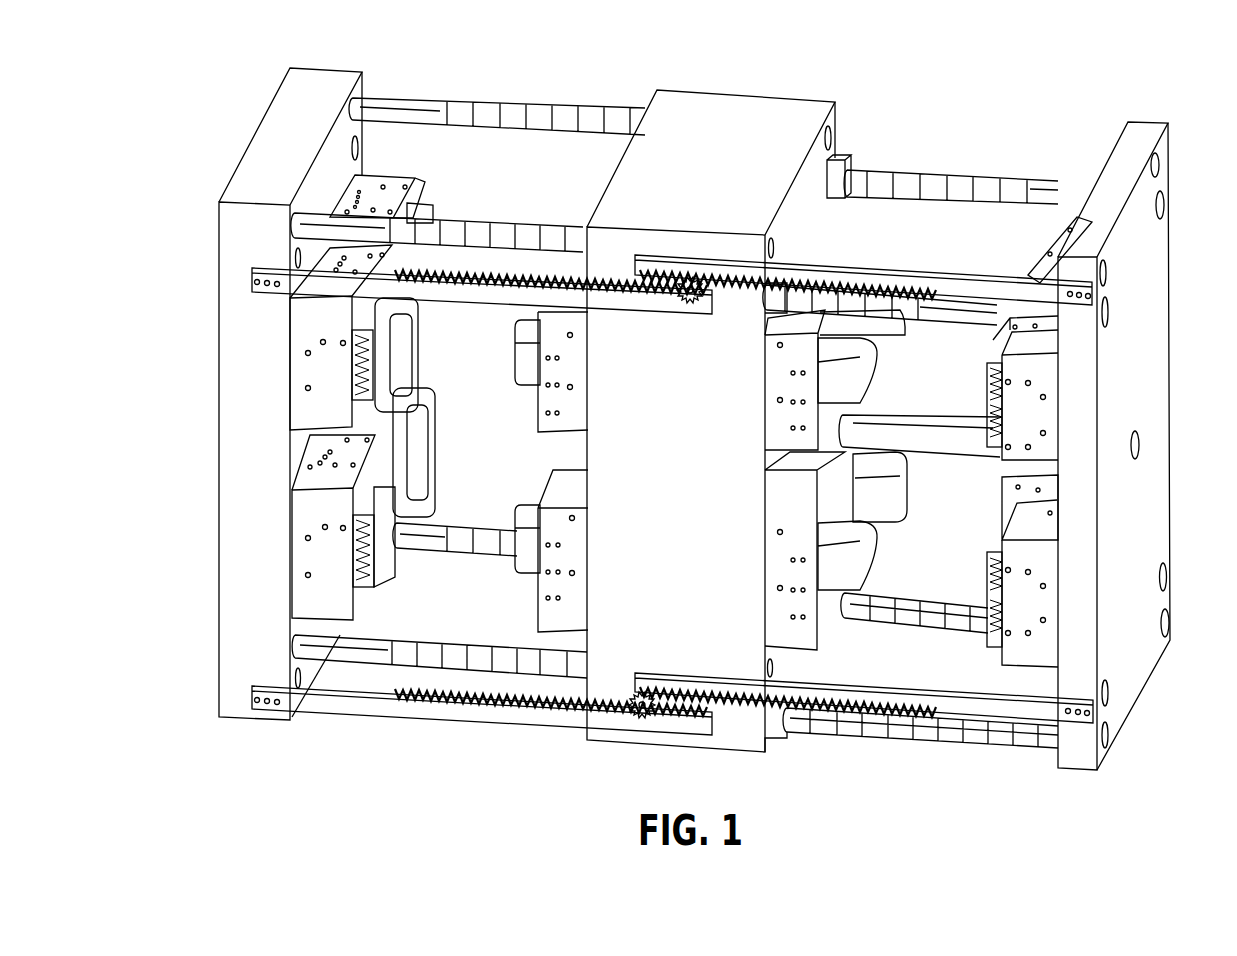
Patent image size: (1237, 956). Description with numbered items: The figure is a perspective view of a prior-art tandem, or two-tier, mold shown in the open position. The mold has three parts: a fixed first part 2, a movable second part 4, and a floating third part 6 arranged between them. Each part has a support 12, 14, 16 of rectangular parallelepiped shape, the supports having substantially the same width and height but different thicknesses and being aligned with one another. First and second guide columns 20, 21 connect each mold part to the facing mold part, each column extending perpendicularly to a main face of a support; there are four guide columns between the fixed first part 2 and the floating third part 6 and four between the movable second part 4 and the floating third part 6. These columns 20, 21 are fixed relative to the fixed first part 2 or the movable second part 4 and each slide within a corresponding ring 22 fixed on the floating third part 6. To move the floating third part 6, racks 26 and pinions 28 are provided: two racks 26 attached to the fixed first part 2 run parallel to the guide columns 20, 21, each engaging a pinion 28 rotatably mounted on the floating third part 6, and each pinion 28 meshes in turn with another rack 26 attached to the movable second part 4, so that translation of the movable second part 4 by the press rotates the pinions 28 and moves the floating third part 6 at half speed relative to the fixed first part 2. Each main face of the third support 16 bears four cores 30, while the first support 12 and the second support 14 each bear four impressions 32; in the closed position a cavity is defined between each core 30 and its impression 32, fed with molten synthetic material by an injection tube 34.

The fixed first part 2 is at (1156, 110).
The movable second part 4 is at (276, 62).
The floating third part 6 is at (846, 95).
The first support 12 is at (1094, 446).
The second support 14 is at (266, 416).
The third support 16 is at (691, 434).
The first guide column 20 is at (960, 184).
The second guide column 21 is at (515, 118).
The ring 22 is at (840, 180).
The rack 26 is at (658, 260).
The pinion 28 is at (689, 304).
The core 30 is at (525, 360).
The impression 32 is at (372, 377).
The injection tube 34 is at (930, 440).